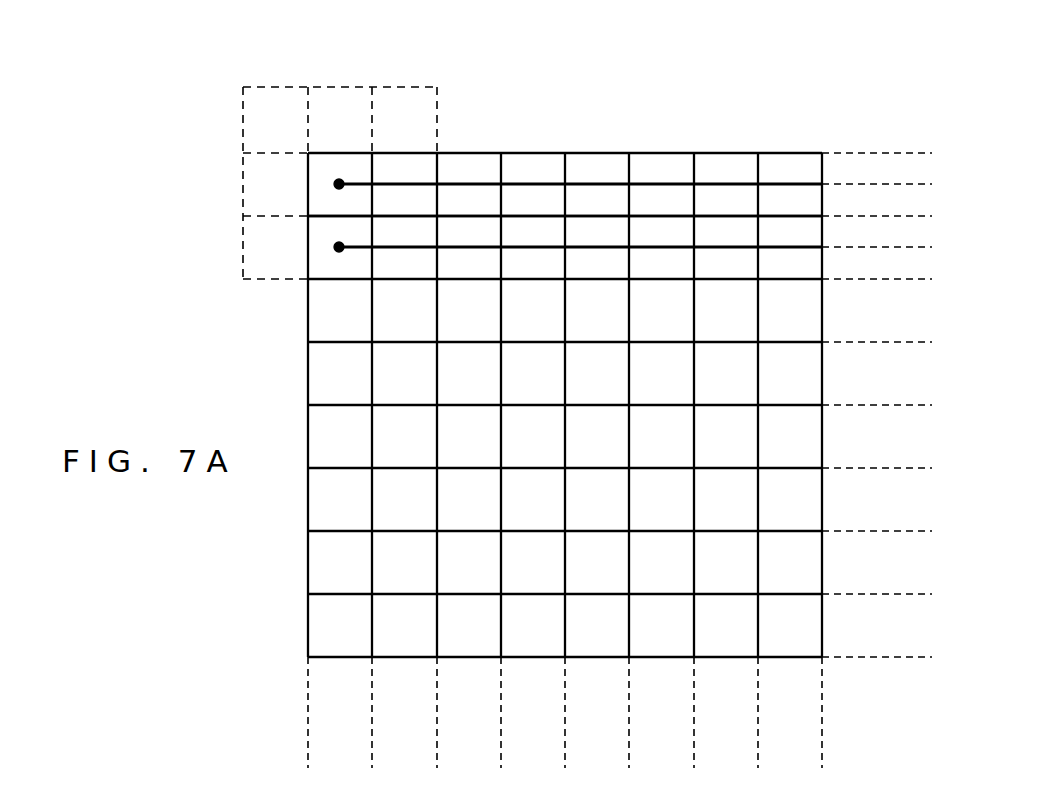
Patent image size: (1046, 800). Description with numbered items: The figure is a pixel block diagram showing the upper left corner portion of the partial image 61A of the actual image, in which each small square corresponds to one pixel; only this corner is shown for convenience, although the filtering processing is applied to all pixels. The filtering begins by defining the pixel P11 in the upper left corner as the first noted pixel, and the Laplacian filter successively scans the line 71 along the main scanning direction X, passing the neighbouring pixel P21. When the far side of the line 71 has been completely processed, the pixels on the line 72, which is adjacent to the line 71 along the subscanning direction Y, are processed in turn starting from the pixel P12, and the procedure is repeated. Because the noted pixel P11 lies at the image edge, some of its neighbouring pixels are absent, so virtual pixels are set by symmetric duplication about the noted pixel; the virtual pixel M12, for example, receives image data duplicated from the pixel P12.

The partial image 61A is at (586, 137).
The virtual pixel M12 is at (334, 97).
The line 71 is at (668, 184).
The line 72 is at (730, 215).
The pixel P11 is at (373, 158).
The pixel P21 is at (438, 158).
The pixel P12 is at (318, 257).